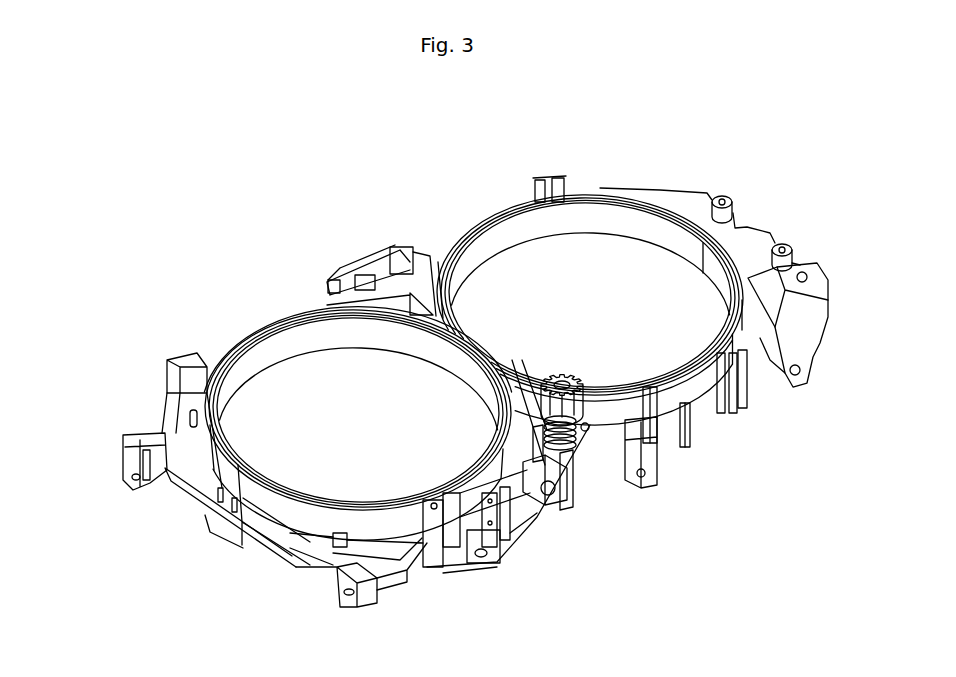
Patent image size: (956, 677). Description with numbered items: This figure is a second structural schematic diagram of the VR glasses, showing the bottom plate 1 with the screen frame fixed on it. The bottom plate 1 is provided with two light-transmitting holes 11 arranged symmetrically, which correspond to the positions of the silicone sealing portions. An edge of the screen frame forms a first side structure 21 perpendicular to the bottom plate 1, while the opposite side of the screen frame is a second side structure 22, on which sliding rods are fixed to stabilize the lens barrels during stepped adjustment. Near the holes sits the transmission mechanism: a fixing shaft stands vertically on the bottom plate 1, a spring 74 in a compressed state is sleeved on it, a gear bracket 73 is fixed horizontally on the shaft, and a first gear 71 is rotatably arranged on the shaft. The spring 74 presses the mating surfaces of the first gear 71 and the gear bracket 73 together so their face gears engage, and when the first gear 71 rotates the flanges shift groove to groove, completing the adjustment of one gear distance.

The bottom plate 1 is at (188, 448).
The light-transmitting holes 11 is at (325, 396).
The first side structure 21 is at (530, 507).
The second side structure 22 is at (385, 264).
The first gear 71 is at (648, 447).
The gear bracket 73 is at (592, 442).
The spring 74 is at (565, 437).